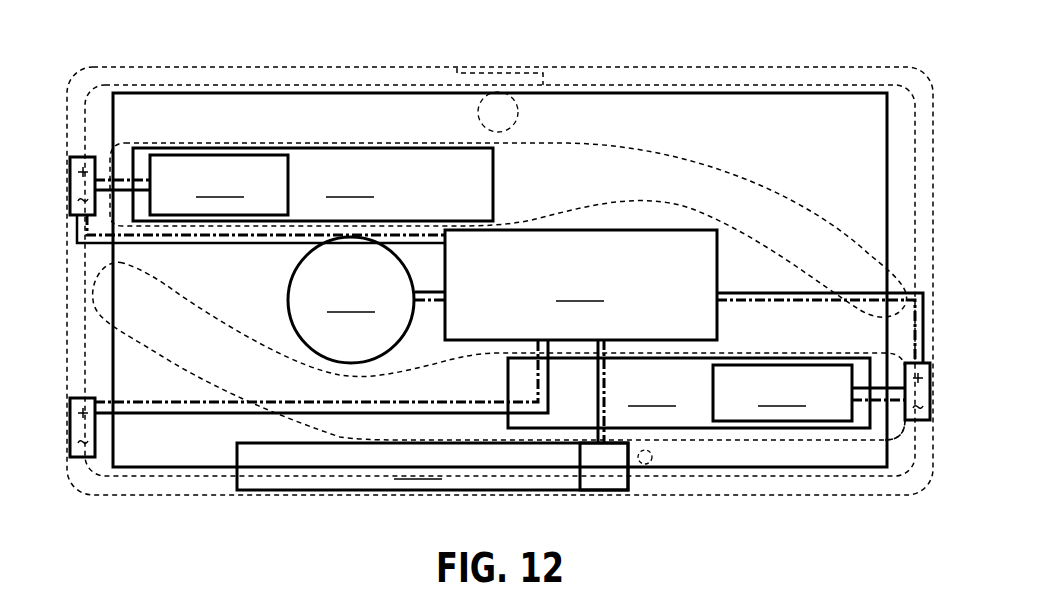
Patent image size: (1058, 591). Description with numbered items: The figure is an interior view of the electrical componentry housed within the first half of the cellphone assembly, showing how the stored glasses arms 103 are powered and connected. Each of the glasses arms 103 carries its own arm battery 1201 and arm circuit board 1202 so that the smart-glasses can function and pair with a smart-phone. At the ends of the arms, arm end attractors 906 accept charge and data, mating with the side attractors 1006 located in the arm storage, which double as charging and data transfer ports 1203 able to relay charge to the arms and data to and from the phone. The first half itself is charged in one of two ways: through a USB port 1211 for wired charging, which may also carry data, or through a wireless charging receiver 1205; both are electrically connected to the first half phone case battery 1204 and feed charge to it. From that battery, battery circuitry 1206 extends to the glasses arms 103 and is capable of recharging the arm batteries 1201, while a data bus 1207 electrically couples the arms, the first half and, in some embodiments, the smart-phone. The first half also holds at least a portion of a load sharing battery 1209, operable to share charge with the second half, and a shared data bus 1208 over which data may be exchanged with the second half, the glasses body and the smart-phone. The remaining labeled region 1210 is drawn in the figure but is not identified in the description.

The glasses arms 103 is at (818, 245).
The arm end attractors 906 is at (898, 423).
The side attractors 1006 is at (80, 193).
The arm batteries 1201 is at (501, 288).
The arm circuit boards 1202 is at (501, 288).
The charging and data transfer ports 1203 is at (88, 155).
The first half phone case battery 1204 is at (581, 285).
The wireless charging receiver 1205 is at (351, 300).
The battery circuitry 1206 is at (438, 241).
The data bus 1207 is at (755, 93).
The shared data bus 1208 is at (432, 466).
The load sharing battery 1209 is at (603, 467).
The flexible region 1210 is at (138, 438).
The USB port 1211 is at (82, 428).